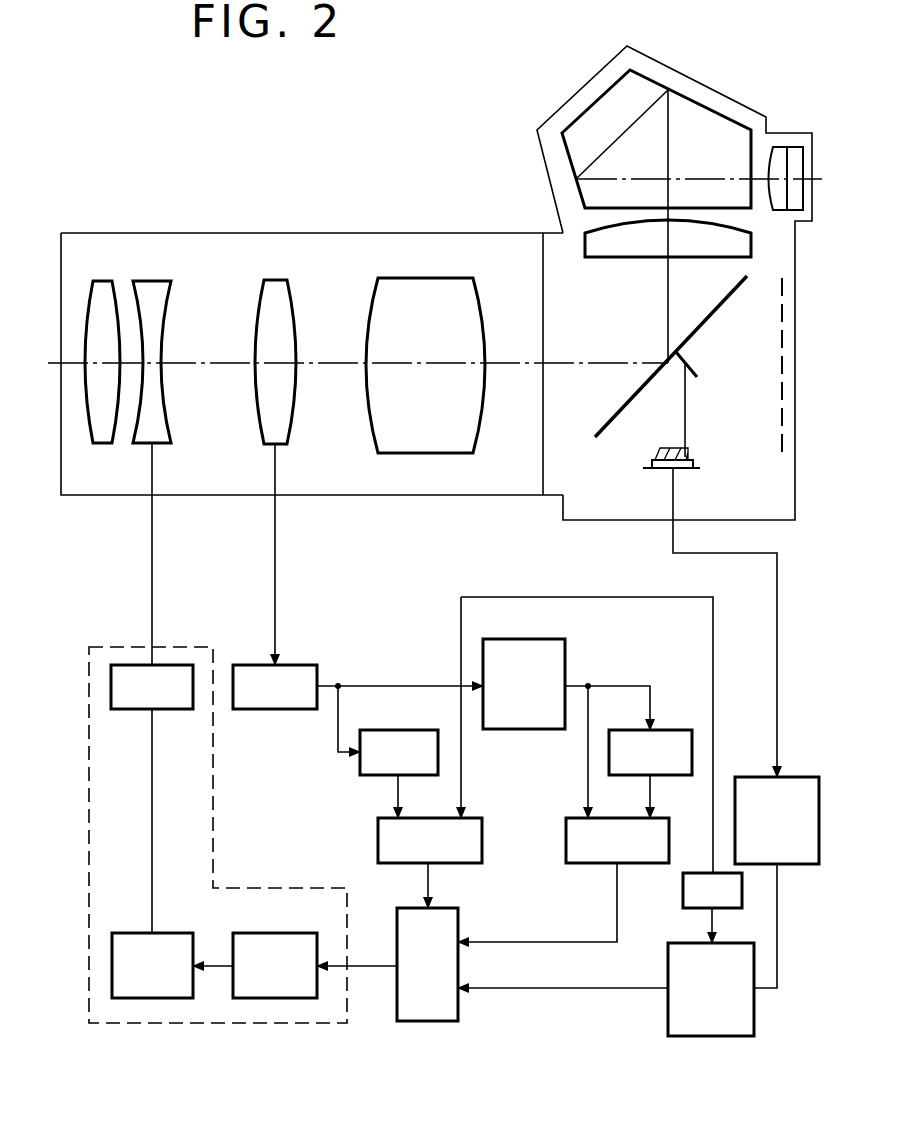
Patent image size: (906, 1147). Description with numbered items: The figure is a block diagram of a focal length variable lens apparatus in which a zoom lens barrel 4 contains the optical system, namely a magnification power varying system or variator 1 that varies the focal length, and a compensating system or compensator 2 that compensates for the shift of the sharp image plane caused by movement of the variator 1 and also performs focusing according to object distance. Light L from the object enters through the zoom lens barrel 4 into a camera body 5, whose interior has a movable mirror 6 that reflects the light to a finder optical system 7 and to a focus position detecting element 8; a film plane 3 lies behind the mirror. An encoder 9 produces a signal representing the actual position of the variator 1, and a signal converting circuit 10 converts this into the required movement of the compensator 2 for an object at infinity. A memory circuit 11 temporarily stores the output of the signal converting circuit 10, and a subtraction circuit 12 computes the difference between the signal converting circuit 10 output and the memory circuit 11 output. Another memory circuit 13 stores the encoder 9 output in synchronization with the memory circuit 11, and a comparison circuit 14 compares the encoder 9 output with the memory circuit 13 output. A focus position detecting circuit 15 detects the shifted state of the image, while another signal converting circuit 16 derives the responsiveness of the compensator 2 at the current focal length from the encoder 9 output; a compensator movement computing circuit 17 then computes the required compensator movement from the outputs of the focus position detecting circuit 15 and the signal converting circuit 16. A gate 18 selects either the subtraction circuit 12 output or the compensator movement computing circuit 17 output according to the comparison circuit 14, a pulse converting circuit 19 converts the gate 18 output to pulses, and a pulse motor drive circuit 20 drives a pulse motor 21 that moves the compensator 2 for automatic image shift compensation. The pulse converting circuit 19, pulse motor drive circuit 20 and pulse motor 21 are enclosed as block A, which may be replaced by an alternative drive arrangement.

The magnification power varying system 1 is at (292, 295).
The compensating system 2 is at (171, 295).
The film plane 3 is at (785, 410).
The zoom lens barrel 4 is at (313, 233).
The camera body 5 is at (581, 520).
The movable mirror 6 is at (716, 315).
The finder optical system 7 is at (712, 95).
The focus position detecting element 8 is at (697, 465).
The encoder 9 is at (303, 665).
The signal converting circuit 10 is at (565, 650).
The memory circuit 11 is at (676, 730).
The subtraction circuit 12 is at (566, 838).
The memory circuit 13 is at (387, 730).
The comparison circuit 14 is at (378, 848).
The focus position detecting circuit 15 is at (800, 777).
The signal converting circuit 16 is at (683, 892).
The compensator movement computing circuit 17 is at (706, 1036).
The gate 18 is at (428, 1021).
The pulse converting circuit 19 is at (280, 933).
The pulse motor drive circuit 20 is at (127, 933).
The pulse motor 21 is at (126, 709).
The light L is at (431, 272).
The block A is at (190, 647).